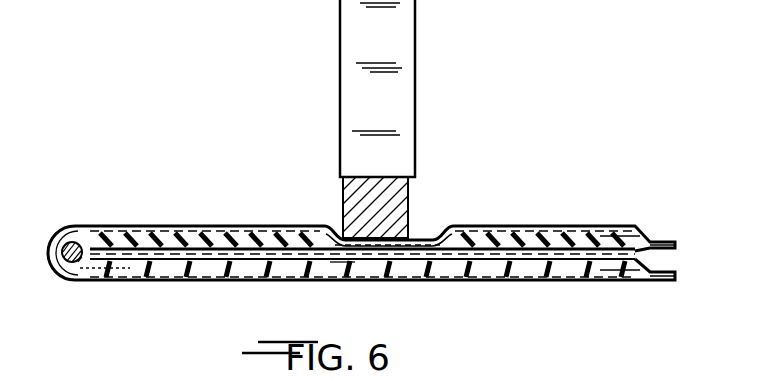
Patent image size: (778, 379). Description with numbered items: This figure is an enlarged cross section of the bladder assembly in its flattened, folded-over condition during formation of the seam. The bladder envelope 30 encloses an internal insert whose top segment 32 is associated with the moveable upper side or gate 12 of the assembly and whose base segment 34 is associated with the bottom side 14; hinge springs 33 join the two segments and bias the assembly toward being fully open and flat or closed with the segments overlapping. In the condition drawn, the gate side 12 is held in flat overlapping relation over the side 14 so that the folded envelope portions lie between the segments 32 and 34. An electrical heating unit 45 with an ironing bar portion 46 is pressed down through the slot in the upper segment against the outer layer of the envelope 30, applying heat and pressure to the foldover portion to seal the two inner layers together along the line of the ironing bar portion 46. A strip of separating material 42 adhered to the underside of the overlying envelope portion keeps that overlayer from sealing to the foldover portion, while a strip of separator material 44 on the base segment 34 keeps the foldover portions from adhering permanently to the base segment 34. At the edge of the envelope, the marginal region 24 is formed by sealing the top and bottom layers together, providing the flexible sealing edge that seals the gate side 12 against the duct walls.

The upper side or gate 12 is at (516, 228).
The bottom side 14 is at (523, 285).
The marginal flexible sealing edge 24 is at (667, 272).
The bladder envelope 30 is at (381, 236).
The top segment 32 is at (587, 240).
The hinge springs 33 is at (56, 228).
The base segment 34 is at (618, 283).
The strip of separating material 42 is at (326, 232).
The strip of separator material 44 is at (341, 262).
The electrical heating unit 45 is at (416, 62).
The ironing bar portion 46 is at (408, 212).